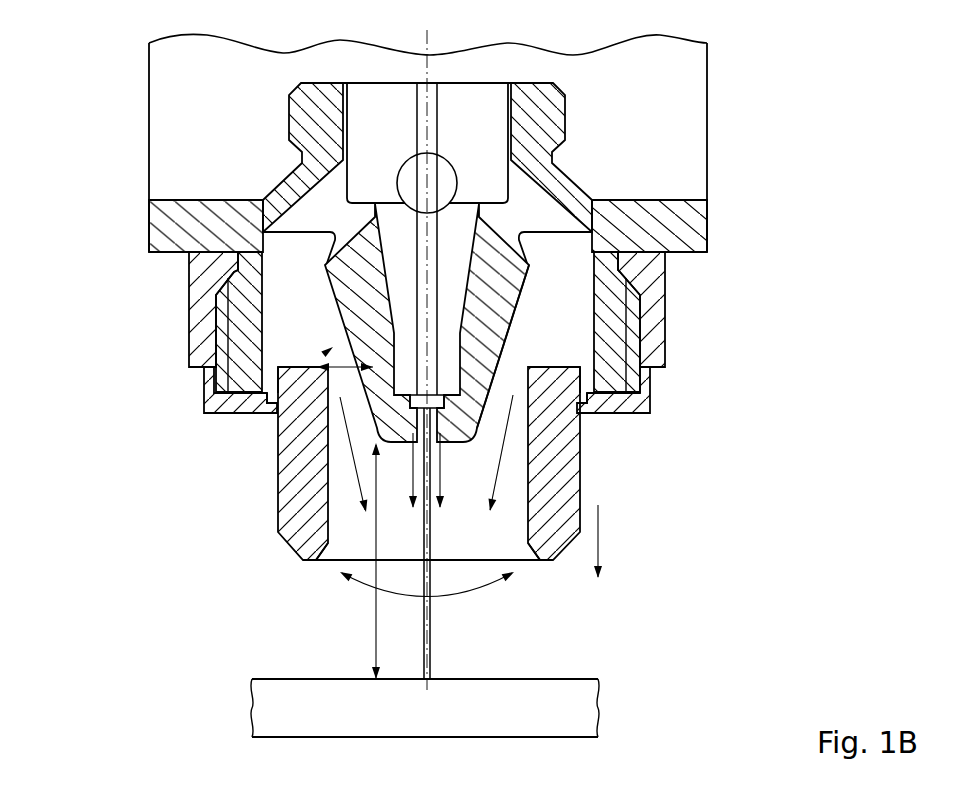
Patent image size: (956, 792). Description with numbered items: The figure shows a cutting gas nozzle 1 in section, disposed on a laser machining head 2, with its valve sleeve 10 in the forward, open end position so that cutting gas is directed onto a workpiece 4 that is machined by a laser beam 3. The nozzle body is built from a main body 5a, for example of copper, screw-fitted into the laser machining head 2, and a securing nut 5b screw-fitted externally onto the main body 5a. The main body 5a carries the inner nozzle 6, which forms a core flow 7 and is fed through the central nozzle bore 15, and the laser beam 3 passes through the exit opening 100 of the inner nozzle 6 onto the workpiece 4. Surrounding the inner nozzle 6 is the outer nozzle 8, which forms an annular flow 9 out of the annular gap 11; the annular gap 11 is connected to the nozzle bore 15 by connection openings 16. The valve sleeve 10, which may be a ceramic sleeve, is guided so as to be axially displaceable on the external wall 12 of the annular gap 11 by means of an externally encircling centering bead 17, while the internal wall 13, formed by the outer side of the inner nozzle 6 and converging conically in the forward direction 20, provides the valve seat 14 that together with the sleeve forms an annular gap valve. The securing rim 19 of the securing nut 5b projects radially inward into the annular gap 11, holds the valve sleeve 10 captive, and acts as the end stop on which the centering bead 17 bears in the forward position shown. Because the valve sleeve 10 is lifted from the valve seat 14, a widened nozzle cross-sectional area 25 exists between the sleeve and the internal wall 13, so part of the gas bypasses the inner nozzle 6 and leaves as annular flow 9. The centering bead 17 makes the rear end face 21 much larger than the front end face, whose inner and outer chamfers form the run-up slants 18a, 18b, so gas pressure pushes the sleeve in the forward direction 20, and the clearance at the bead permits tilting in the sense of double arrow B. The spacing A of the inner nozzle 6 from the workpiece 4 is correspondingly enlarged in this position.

The cutting gas nozzle 1 is at (146, 304).
The laser machining head 2 is at (662, 85).
The laser beam 3 is at (430, 653).
The workpiece 4 is at (282, 708).
The main body 5a is at (655, 220).
The securing nut 5b is at (652, 278).
The inner nozzle 6 is at (410, 425).
The core flow 7 is at (443, 460).
The outer nozzle 8 is at (216, 372).
The annular flow 9 is at (508, 430).
The valve sleeve 10 is at (278, 517).
The annular gap 11 is at (283, 322).
The external wall 12 is at (266, 298).
The internal wall 13 is at (510, 332).
The valve seat 14 is at (325, 265).
The nozzle bore 15 is at (480, 120).
The connection openings 16 is at (533, 202).
The centering bead 17 is at (595, 376).
The run-up slant 18a is at (322, 563).
The run-up slant 18b is at (290, 555).
The securing rim 19 is at (594, 407).
The forward direction 20 is at (600, 533).
The rear end face 21 is at (562, 367).
The nozzle cross-sectional area 25 is at (330, 350).
The exit opening 100 is at (376, 455).
The spacing A is at (373, 605).
The double arrow B is at (453, 597).